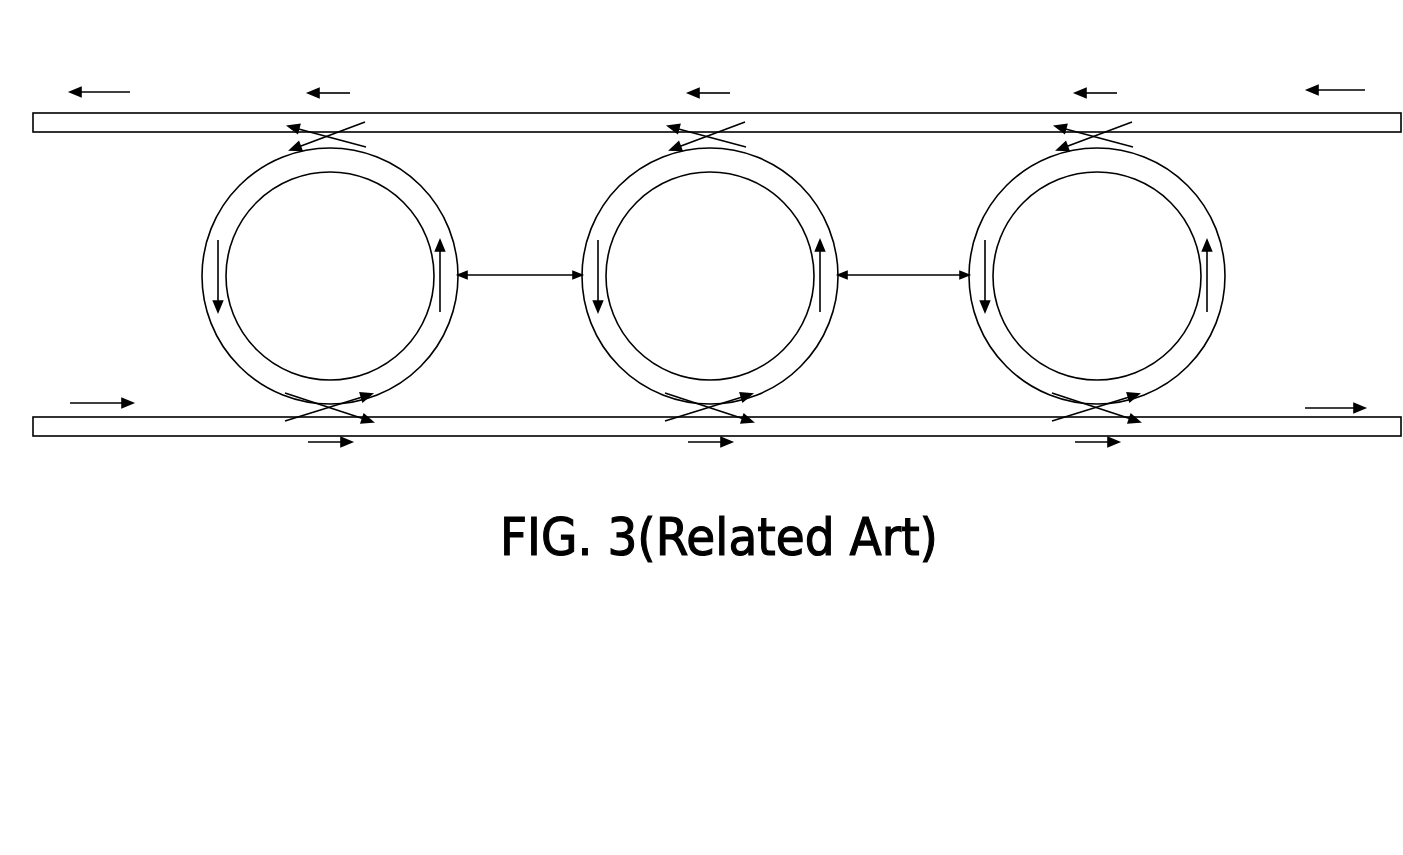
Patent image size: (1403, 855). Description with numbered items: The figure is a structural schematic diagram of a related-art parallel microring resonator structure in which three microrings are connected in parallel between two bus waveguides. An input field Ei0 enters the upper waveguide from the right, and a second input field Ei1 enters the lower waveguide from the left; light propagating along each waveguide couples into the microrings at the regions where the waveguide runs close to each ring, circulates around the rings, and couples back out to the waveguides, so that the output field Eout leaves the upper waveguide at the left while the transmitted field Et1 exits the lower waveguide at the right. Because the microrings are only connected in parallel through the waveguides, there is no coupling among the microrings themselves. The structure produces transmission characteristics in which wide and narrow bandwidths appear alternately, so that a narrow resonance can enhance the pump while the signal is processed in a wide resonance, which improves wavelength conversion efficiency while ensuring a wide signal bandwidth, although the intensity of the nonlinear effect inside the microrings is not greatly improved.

The output optical field Eout is at (100, 77).
The input optical field Ei0 is at (1336, 76).
The input optical field of bottom waveguide Ei1 is at (101, 392).
The transmitted optical field Et1 is at (1335, 395).